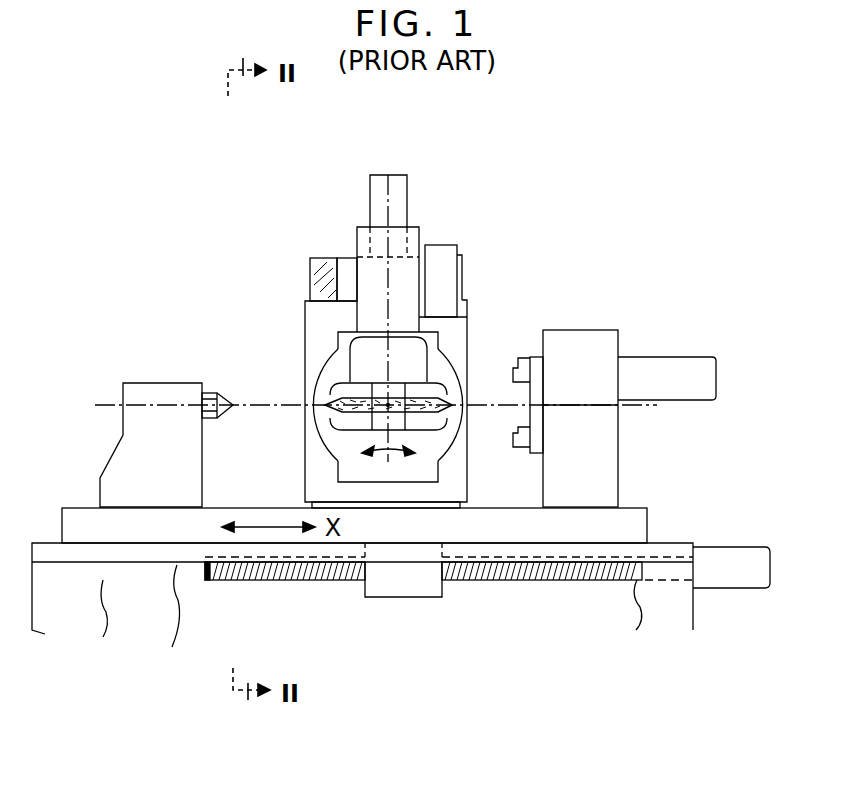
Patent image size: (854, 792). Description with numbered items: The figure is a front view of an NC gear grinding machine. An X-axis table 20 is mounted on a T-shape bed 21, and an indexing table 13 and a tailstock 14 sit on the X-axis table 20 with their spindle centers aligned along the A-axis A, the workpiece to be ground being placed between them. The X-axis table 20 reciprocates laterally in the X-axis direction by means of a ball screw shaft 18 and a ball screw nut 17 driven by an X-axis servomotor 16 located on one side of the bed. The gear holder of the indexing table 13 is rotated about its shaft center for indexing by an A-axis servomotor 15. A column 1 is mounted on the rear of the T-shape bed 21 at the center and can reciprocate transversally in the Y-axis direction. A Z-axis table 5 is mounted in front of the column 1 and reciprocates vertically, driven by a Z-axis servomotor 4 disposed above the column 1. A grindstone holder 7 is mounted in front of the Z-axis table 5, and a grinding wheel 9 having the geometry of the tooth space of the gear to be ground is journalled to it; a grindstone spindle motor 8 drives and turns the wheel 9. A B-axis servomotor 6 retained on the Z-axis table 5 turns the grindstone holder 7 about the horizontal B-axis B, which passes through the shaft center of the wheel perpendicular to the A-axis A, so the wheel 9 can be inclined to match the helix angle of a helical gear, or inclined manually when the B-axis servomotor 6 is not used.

The column 1 is at (323, 257).
The Z-axis servomotor 4 is at (385, 172).
The Z-axis table 5 is at (318, 322).
The B-axis servomotor 6 is at (447, 245).
The grindstone holder 7 is at (313, 367).
The grindstone spindle motor 8 is at (375, 268).
The grinding wheel 9 is at (343, 405).
The indexing table 13 is at (570, 330).
The tailstock 14 is at (178, 383).
The A-axis servomotor 15 is at (652, 357).
The X-axis servomotor 16 is at (723, 550).
The ball screw nut 17 is at (420, 590).
The ball screw shaft 18 is at (240, 580).
The X-axis table 20 is at (83, 518).
The T-shape bed 21 is at (362, 610).
The A-axis A is at (108, 405).
The B-axis B is at (388, 405).